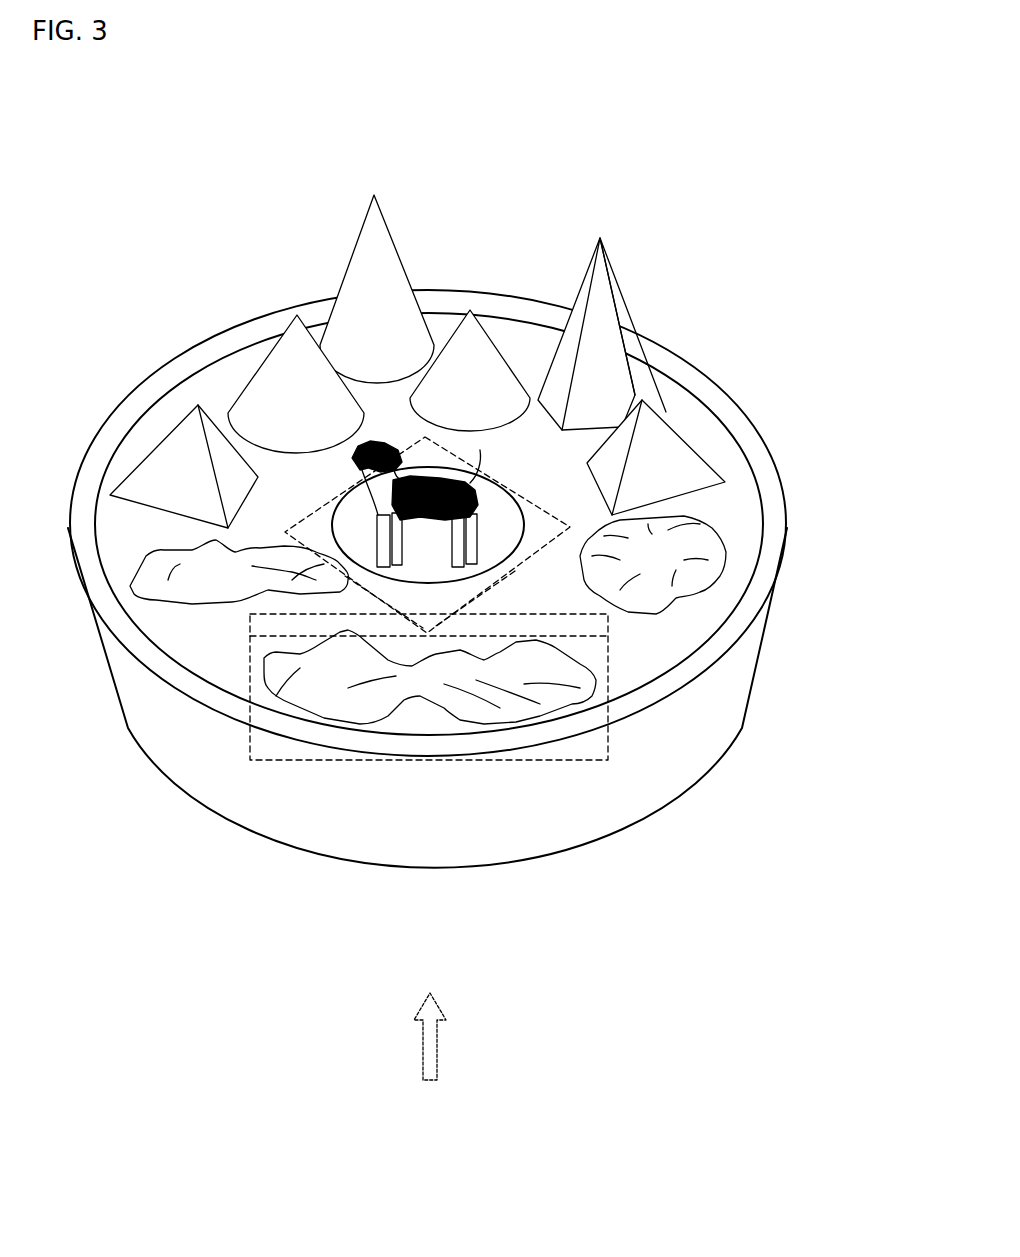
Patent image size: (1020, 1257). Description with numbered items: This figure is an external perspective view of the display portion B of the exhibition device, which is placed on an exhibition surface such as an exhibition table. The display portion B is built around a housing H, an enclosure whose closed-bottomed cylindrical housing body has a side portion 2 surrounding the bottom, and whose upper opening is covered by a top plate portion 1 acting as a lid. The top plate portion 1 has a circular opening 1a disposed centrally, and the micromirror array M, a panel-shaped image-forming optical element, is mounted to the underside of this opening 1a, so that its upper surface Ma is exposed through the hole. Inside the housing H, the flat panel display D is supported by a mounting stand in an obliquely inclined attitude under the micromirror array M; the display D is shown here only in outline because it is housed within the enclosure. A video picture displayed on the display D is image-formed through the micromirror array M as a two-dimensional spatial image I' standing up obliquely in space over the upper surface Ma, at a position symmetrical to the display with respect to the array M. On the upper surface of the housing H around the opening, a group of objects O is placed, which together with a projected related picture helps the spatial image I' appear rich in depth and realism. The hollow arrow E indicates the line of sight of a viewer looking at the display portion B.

The objects O is at (302, 270).
The display portion B is at (510, 268).
The top plate portion 1 is at (702, 434).
The circular opening 1a is at (464, 478).
The spatial image I' is at (427, 519).
The micromirror array M is at (364, 513).
The upper surface Ma is at (490, 532).
The housing H is at (458, 502).
The side portion 2 is at (757, 655).
The display D is at (616, 747).
The hollow arrow E is at (440, 1036).